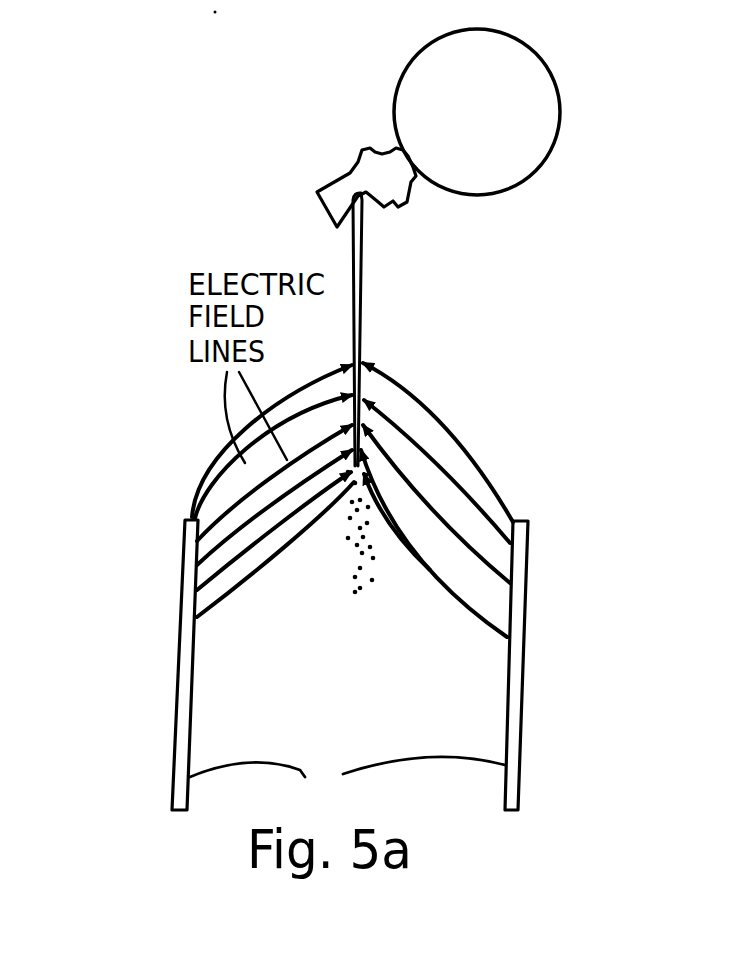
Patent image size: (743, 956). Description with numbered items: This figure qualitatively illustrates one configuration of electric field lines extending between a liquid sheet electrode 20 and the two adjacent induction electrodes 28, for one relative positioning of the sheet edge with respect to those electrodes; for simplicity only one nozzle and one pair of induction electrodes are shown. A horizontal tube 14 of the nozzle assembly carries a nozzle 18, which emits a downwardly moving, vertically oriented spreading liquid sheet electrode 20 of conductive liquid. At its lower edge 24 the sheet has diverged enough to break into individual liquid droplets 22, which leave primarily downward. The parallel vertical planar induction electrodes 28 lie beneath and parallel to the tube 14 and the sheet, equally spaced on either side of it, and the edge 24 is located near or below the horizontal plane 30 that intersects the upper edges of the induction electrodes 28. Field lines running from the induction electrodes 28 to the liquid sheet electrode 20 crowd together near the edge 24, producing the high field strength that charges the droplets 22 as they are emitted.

The horizontal tube 14 is at (556, 128).
The nozzle 18 is at (356, 177).
The liquid sheet electrode 20 is at (362, 290).
The liquid droplets 22 is at (352, 555).
The edge 24 is at (368, 432).
The induction electrode 28 is at (347, 771).
The horizontal plane 30 is at (538, 523).